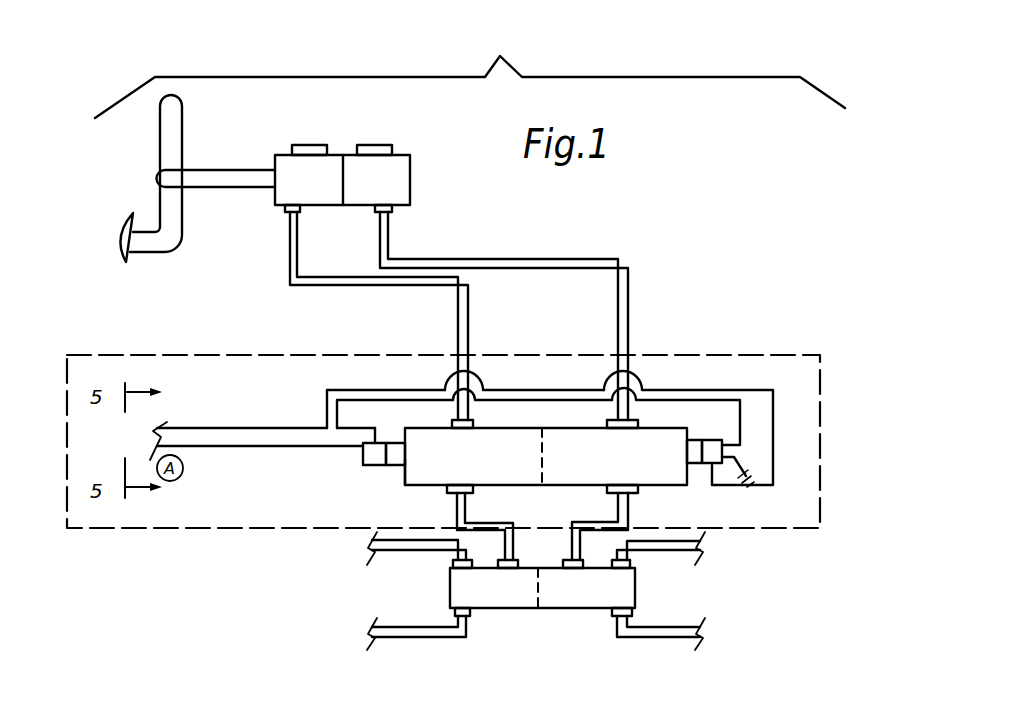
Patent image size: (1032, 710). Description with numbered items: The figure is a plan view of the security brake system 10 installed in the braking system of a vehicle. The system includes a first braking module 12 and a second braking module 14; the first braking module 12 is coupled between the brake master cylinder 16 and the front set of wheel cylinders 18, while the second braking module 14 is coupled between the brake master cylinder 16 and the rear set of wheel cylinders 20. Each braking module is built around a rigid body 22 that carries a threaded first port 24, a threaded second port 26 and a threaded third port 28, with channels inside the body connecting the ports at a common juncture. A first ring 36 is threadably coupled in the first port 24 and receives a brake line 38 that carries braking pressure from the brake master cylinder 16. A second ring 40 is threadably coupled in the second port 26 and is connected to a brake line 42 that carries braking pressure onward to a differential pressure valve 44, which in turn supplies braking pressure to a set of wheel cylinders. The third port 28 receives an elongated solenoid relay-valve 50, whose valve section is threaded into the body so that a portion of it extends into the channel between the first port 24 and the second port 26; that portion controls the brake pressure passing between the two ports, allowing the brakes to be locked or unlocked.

The security brake system 10 is at (455, 83).
The first braking module 12 is at (652, 448).
The second braking module 14 is at (600, 383).
The brake master cylinder 16 is at (397, 167).
The front set of wheel cylinders 18 is at (815, 583).
The rear set of wheel cylinders 20 is at (283, 587).
The rigid body 22 is at (407, 467).
The first port 24 is at (513, 463).
The second port 26 is at (445, 490).
The third port 28 is at (407, 441).
The first ring 36 is at (477, 428).
The brake line 38 is at (415, 262).
The second ring 40 is at (450, 488).
The brake line 42 is at (515, 545).
The differential pressure valve 44 is at (582, 596).
The solenoid relay-valve 50 is at (370, 457).